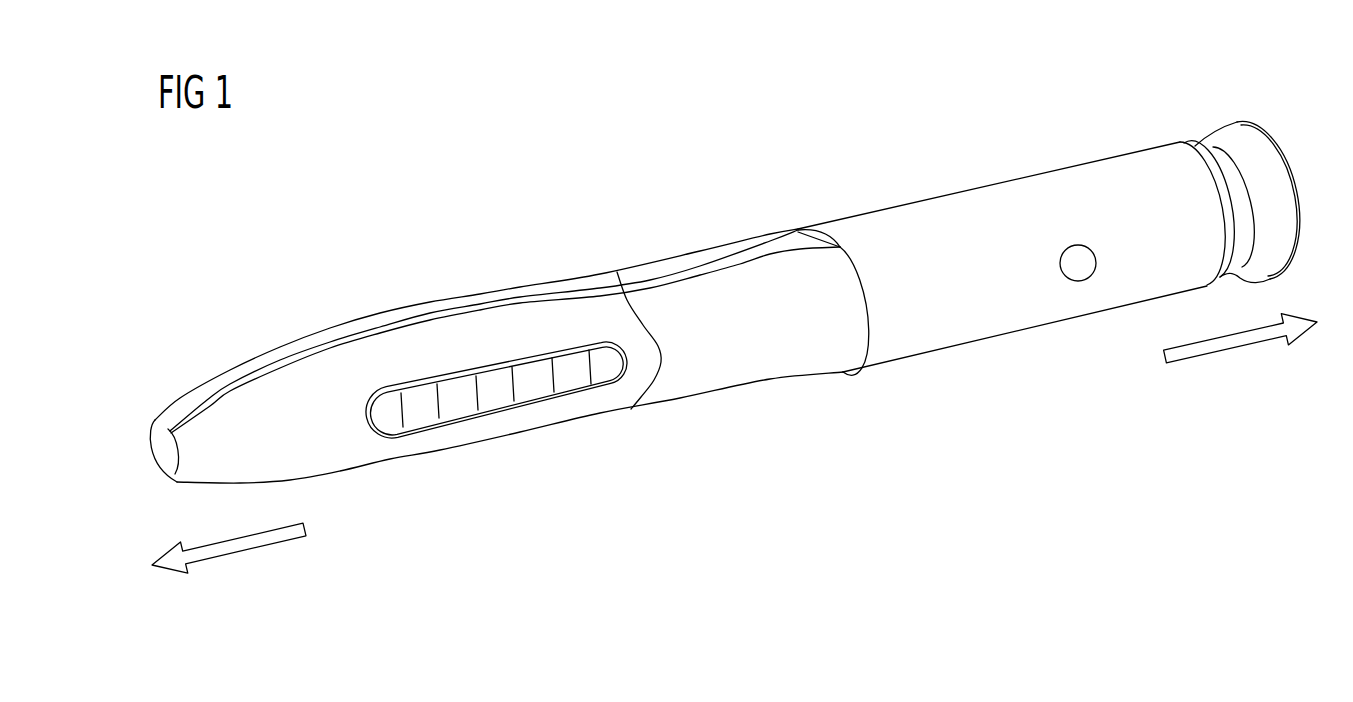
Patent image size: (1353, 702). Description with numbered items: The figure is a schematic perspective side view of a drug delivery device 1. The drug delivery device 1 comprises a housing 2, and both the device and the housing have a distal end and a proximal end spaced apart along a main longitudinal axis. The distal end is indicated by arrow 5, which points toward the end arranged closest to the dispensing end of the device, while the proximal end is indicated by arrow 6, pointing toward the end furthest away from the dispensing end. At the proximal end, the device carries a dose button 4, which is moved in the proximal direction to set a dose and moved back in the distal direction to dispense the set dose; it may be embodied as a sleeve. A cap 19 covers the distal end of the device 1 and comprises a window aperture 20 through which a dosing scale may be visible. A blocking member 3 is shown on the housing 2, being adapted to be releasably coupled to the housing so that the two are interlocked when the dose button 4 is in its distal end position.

The drug delivery device 1 is at (653, 190).
The housing 2 is at (908, 333).
The blocking member 3 is at (1078, 264).
The dose button 4 is at (1231, 136).
The arrow 5 is at (237, 545).
The arrow 6 is at (1222, 343).
The cap 19 is at (328, 333).
The window aperture 20 is at (565, 388).